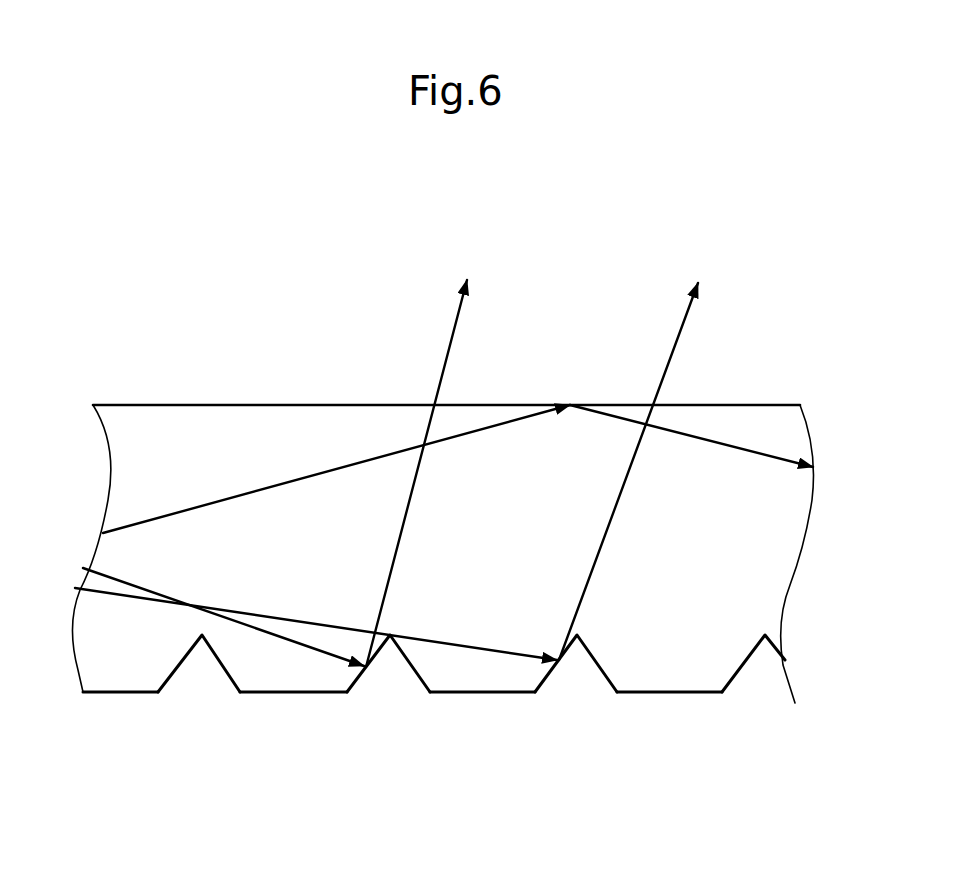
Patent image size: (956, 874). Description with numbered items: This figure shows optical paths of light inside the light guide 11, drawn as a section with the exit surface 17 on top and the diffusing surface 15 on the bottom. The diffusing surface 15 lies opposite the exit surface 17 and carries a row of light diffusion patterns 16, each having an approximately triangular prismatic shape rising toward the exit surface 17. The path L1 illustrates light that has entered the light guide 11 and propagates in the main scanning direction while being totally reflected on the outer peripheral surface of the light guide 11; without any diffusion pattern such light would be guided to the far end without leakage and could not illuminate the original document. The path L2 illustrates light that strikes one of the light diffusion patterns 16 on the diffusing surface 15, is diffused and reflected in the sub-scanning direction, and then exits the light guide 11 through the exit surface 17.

The light guide 11 is at (745, 396).
The exit surface 17 is at (232, 404).
The diffusing surface 15 is at (297, 692).
The light diffusion pattern 16 is at (228, 675).
The light totally reflected on the outer peripheral surface L1 is at (288, 478).
The light diffused by the light diffusion patterns L2 is at (470, 645).